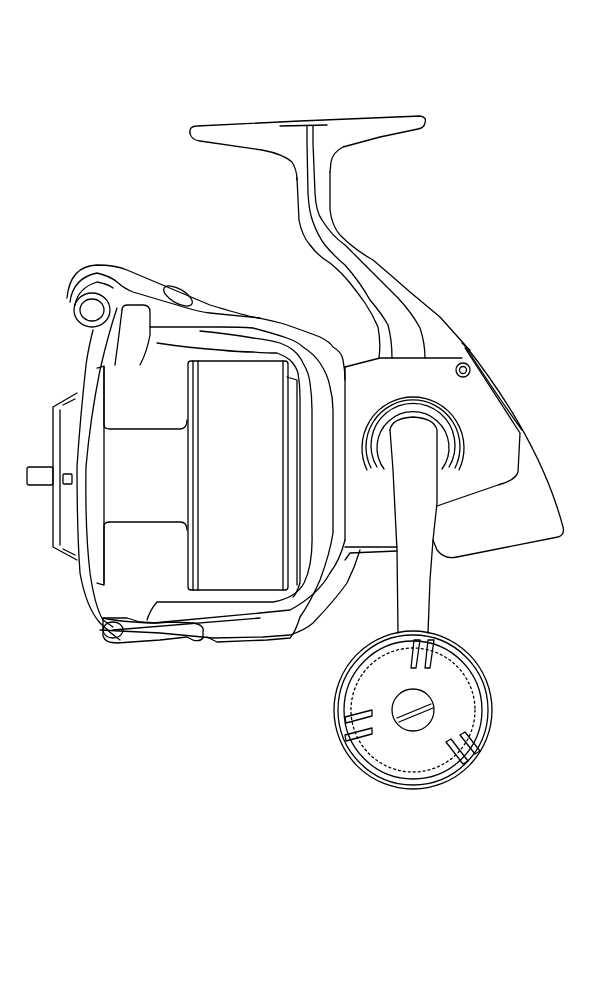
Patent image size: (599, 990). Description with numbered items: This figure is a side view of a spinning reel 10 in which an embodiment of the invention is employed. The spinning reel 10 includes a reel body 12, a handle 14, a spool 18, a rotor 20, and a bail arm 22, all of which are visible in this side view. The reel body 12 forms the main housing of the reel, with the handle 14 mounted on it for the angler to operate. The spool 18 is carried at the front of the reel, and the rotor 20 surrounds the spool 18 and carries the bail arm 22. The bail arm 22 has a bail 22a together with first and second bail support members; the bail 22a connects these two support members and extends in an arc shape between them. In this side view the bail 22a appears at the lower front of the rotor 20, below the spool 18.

The spinning reel 10 is at (452, 95).
The reel body 12 is at (453, 318).
The handle 14 is at (504, 713).
The spool 18 is at (140, 413).
The rotor 20 is at (285, 648).
The bail arm 22 is at (127, 668).
The bail 22a is at (85, 613).